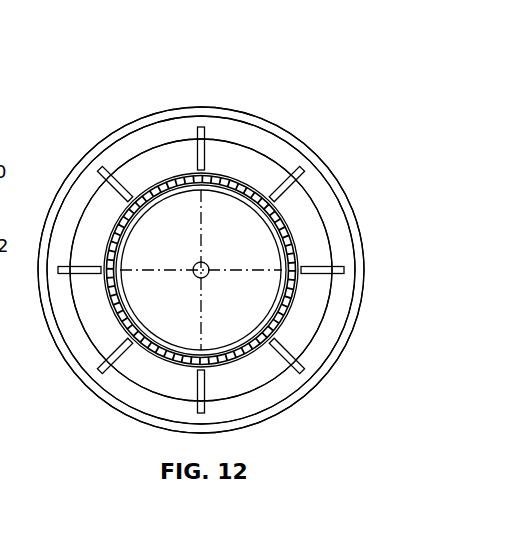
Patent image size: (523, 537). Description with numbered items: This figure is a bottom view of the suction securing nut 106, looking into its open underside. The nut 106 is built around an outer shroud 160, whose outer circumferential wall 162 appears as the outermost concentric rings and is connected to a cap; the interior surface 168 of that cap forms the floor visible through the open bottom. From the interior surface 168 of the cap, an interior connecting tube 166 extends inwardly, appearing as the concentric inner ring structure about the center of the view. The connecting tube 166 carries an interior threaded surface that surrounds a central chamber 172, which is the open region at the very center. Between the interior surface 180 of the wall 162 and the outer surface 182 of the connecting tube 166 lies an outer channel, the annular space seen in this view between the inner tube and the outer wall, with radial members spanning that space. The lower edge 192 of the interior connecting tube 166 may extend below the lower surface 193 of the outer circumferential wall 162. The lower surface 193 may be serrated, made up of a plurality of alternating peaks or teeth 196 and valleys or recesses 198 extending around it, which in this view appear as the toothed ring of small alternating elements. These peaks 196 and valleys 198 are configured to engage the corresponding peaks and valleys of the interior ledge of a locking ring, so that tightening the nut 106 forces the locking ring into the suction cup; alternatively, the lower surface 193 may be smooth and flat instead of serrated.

The suction securing nut 106 is at (96, 72).
The outer shroud 160 is at (362, 228).
The outer circumferential wall 162 is at (357, 327).
The lower surface 193 is at (350, 210).
The interior surface 180 is at (327, 353).
The interior surface 168 is at (257, 167).
The interior connecting tube 166 is at (338, 187).
The lower edge 192 is at (285, 225).
The peaks or teeth 196 is at (182, 176).
The valleys or recesses 198 is at (183, 180).
The outer surface 182 is at (297, 295).
The central chamber 172 is at (222, 230).